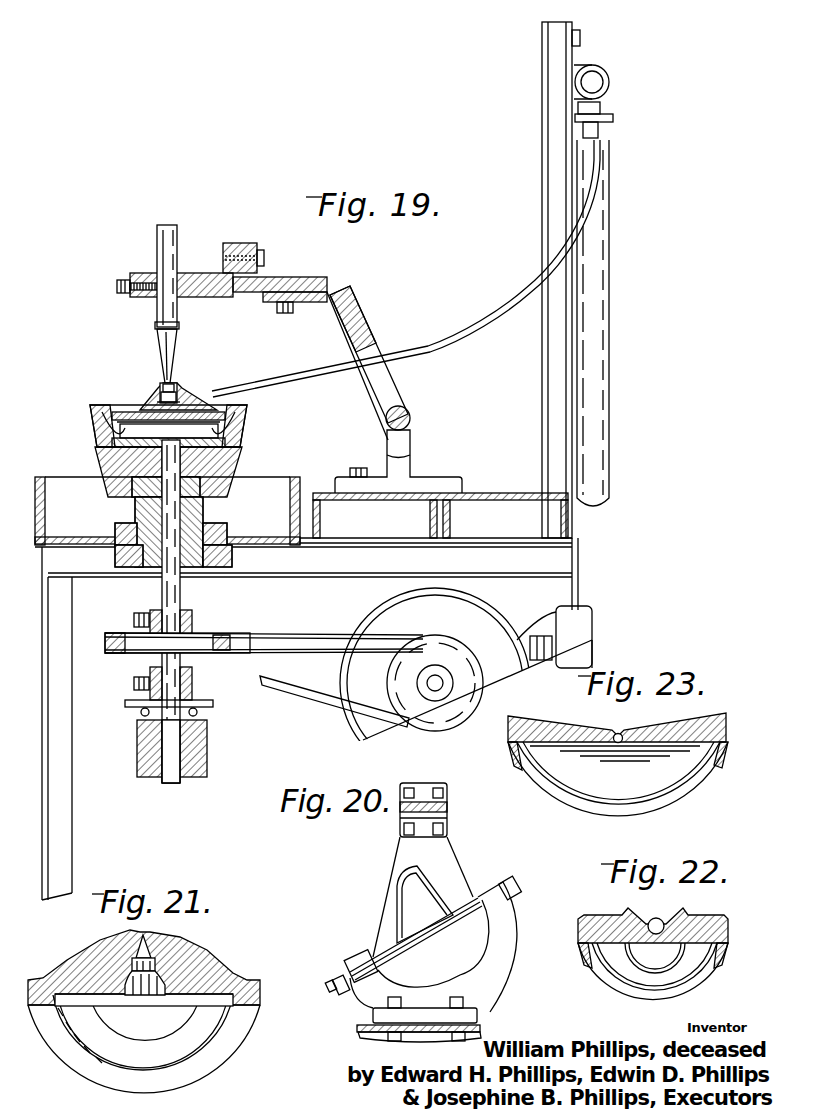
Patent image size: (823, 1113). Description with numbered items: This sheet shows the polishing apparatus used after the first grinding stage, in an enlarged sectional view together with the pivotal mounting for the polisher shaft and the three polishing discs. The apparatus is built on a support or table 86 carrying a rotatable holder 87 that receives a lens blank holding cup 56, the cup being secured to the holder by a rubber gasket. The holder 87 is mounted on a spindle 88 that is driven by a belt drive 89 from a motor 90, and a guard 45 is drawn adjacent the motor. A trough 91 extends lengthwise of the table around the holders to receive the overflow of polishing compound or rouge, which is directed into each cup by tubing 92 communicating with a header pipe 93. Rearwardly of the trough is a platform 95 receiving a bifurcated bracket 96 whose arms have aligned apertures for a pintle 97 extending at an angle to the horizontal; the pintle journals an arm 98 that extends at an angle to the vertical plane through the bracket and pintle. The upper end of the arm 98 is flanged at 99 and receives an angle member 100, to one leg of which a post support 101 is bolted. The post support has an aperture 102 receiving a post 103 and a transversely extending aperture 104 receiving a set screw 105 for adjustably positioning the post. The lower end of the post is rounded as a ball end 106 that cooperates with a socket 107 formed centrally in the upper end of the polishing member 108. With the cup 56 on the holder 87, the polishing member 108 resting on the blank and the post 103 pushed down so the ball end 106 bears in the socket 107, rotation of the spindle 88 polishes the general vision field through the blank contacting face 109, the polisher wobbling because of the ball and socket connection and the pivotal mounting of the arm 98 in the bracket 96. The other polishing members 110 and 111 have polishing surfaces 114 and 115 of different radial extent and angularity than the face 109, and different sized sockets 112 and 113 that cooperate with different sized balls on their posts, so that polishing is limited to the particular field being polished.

In FIG. 19, the guard shield 45 is at (362, 731).
In FIG. 19, the lens blank holding cup 56 is at (249, 416).
In FIG. 19, the support or table 86 is at (46, 612).
In FIG. 19, the rotatable holder 87 is at (97, 456).
In FIG. 19, the spindle 88 is at (181, 601).
In FIG. 19, the belt drive 89 is at (294, 685).
In FIG. 19, the motor 90 is at (503, 627).
In FIG. 19, the trough 91 is at (43, 477).
In FIG. 19, the tubing 92 is at (461, 345).
In FIG. 19, the header pipe 93 is at (609, 74).
In FIG. 19, the platform 95 is at (465, 493).
In FIG. 19, the bracket 96 is at (412, 466).
In FIG. 20, the bracket 96 is at (500, 988).
In FIG. 19, the pintle 97 is at (410, 414).
In FIG. 20, the pintle 97 is at (333, 992).
In FIG. 19, the arm 98 is at (364, 330).
In FIG. 20, the arm 98 is at (456, 875).
In FIG. 19, the flange 99 is at (335, 292).
In FIG. 19, the angle member 100 is at (312, 277).
In FIG. 19, the post support 101 is at (216, 297).
In FIG. 19, the aperture 102 is at (182, 273).
In FIG. 19, the post 103 is at (174, 228).
In FIG. 19, the transversely extending aperture 104 is at (142, 298).
In FIG. 19, the set screw 105 is at (117, 291).
In FIG. 19, the ball end 106 is at (174, 381).
In FIG. 19, the socket 107 is at (181, 388).
In FIG. 21, the socket 107 is at (150, 935).
In FIG. 19, the polishing member 108 is at (143, 394).
In FIG. 21, the polishing member 108 is at (220, 1050).
In FIG. 21, the blank contacting face 109 is at (40, 987).
In FIG. 23, the polishing member 110 is at (715, 716).
In FIG. 22, the polishing member 111 is at (732, 927).
In FIG. 23, the socket 112 is at (620, 730).
In FIG. 22, the socket 113 is at (650, 922).
In FIG. 23, the polishing surface 114 is at (510, 748).
In FIG. 22, the polishing surface 115 is at (586, 955).